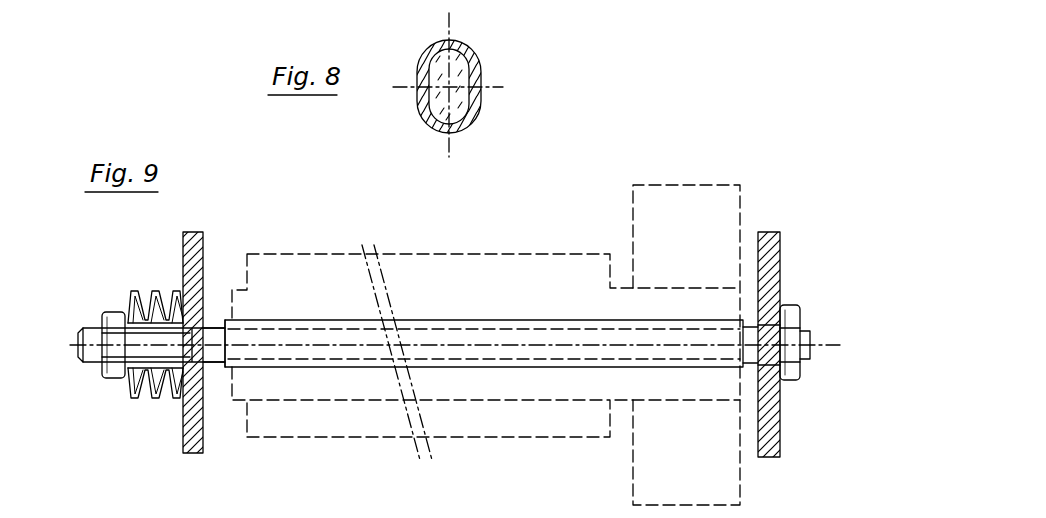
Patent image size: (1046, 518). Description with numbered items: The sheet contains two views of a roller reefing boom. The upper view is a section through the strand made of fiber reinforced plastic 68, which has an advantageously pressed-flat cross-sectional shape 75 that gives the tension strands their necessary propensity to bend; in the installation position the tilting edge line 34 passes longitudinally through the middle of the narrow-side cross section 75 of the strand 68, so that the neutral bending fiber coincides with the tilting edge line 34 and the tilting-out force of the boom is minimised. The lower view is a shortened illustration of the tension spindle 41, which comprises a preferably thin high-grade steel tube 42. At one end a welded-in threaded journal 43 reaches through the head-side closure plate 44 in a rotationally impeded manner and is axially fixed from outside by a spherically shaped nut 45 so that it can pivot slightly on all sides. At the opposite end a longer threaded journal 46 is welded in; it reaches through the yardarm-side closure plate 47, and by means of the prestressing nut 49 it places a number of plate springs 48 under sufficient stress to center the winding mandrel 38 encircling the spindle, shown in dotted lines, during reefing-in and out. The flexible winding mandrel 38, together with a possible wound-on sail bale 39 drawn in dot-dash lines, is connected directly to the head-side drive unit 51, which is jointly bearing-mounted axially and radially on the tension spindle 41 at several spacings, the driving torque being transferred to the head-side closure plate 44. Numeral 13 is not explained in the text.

In FIG. 8, the tubular member 13 is at (480, 80).
In FIG. 8, the tilting edge line 34 is at (450, 25).
In FIG. 8, the strand made of fiber reinforced plastic 68 is at (468, 110).
In FIG. 8, the cross-sectional shape 75 is at (392, 141).
In FIG. 9, the winding mandrel 38 is at (525, 307).
In FIG. 9, the wound-on sail bale 39 is at (453, 270).
In FIG. 9, the tension spindle 41 is at (338, 475).
In FIG. 9, the high-grade steel tube 42 is at (523, 367).
In FIG. 9, the threaded journal 43 is at (763, 362).
In FIG. 9, the head-side closure plate 44 is at (777, 285).
In FIG. 9, the spherically shaped nut 45 is at (793, 318).
In FIG. 9, the longer threaded journal 46 is at (213, 365).
In FIG. 9, the yardarm-side closure plate 47 is at (200, 270).
In FIG. 9, the plate springs 48 is at (152, 290).
In FIG. 9, the prestressing nut 49 is at (110, 320).
In FIG. 9, the head-side drive unit 51 is at (697, 218).